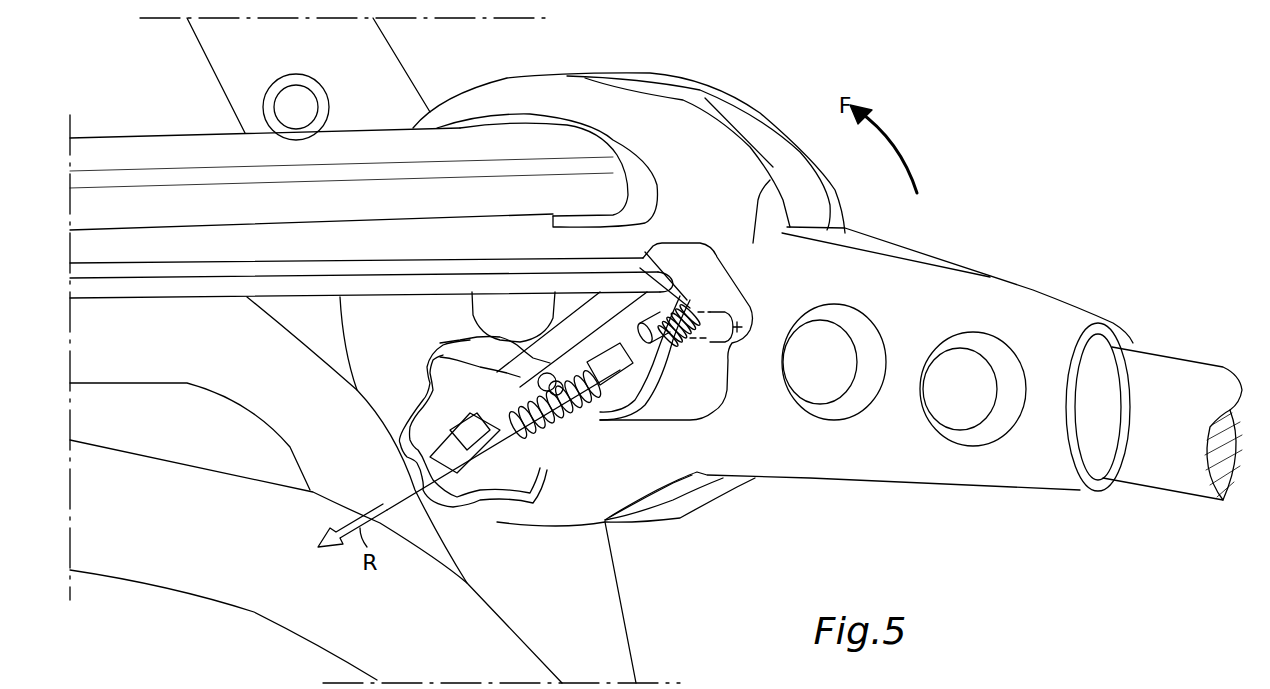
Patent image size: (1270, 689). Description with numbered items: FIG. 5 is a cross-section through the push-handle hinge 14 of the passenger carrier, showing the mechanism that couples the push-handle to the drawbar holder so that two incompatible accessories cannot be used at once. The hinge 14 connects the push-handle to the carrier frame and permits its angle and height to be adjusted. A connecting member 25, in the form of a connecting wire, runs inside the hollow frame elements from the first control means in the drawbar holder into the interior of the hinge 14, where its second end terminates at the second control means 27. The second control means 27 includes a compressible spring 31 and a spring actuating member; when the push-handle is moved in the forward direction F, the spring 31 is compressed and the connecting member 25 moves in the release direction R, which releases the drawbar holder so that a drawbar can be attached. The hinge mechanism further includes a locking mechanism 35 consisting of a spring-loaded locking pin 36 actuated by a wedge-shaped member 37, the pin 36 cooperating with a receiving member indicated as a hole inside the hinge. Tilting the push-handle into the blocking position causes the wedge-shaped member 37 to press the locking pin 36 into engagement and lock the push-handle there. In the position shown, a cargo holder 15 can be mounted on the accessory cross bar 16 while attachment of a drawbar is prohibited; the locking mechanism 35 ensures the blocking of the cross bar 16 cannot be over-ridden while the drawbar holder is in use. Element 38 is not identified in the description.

The push-handle hinge 14 is at (717, 177).
The cargo holder 15 is at (1153, 387).
The accessory cross bar 16 is at (503, 140).
The connecting member 25 is at (410, 487).
The second control means 27 is at (480, 370).
The compressible spring 31 is at (517, 440).
The locking mechanism 35 is at (678, 320).
The locking pin 36 is at (643, 350).
The wedge-shaped member 37 is at (673, 307).
The nut 38 is at (740, 325).